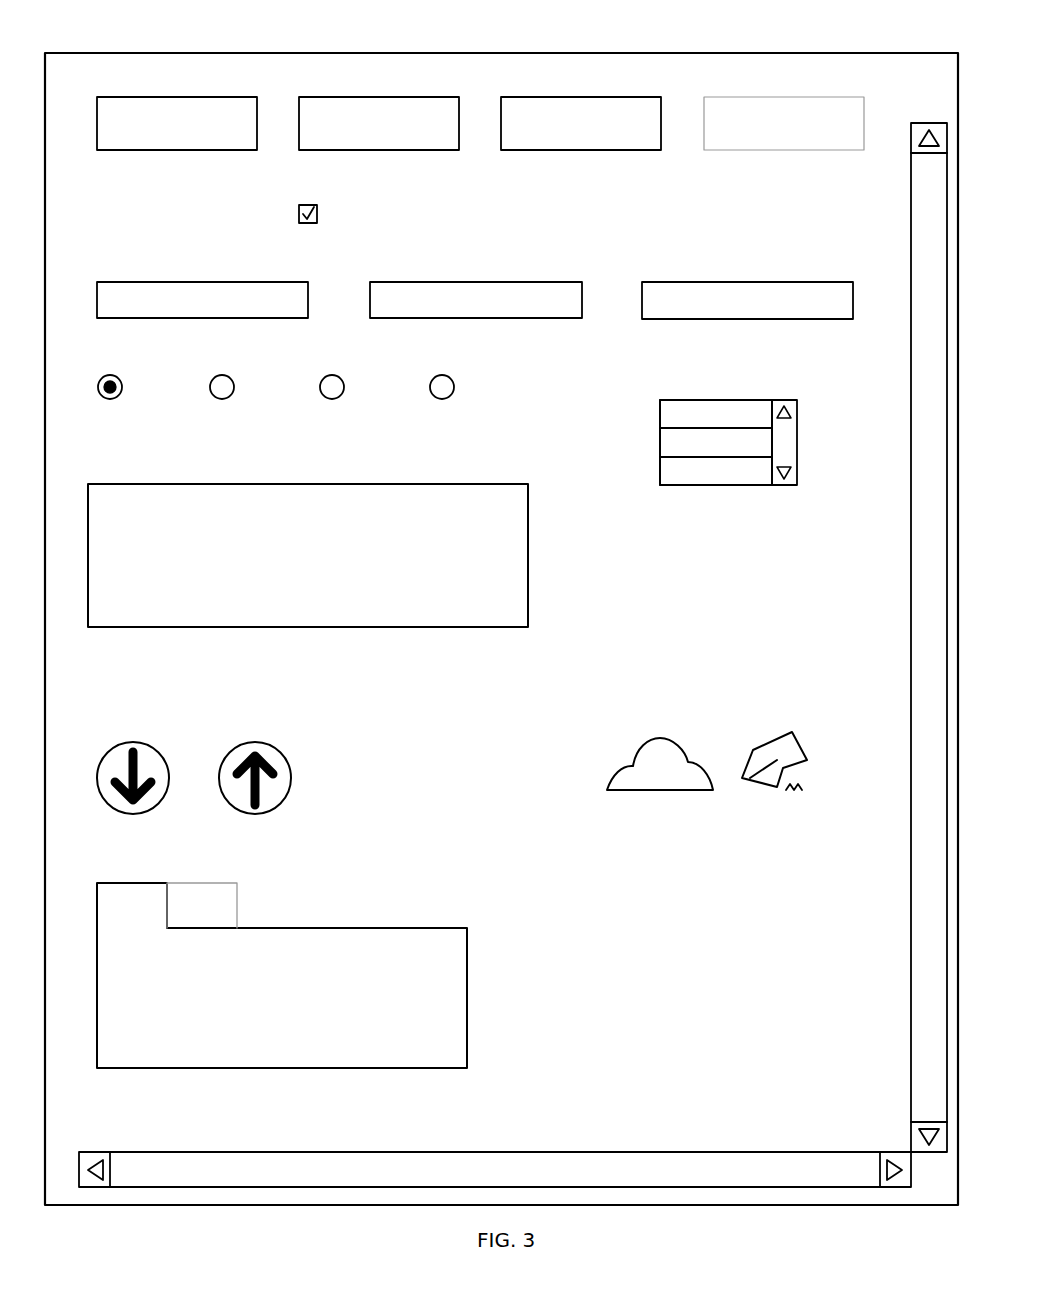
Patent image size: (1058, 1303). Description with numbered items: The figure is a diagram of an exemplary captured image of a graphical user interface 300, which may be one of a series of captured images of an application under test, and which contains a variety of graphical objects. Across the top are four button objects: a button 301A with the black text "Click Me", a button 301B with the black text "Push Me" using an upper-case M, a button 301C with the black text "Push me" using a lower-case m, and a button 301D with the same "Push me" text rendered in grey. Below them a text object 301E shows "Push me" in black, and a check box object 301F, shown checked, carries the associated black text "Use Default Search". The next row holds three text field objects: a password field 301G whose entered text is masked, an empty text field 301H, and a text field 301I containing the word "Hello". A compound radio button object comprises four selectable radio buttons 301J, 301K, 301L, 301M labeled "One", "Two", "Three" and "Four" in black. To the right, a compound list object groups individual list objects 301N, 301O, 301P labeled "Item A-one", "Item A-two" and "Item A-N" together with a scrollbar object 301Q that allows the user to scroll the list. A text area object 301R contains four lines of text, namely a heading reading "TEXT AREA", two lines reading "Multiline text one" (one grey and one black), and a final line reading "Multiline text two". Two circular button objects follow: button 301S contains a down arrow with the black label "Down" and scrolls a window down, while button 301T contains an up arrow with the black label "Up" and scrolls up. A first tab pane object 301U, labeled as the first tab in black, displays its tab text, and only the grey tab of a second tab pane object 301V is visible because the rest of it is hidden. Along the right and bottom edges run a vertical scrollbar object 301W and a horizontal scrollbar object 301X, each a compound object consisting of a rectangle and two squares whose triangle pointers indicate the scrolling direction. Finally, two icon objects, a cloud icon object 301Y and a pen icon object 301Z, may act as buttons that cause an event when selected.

The graphical user interface 300 is at (539, 52).
The button object 301A is at (178, 97).
The button object 301B is at (380, 97).
The button object 301C is at (582, 97).
The button object 301D is at (784, 97).
The text object 301E is at (152, 203).
The check box object 301F is at (365, 203).
The password field 301G is at (203, 282).
The text field 301H is at (476, 282).
The text field 301I is at (748, 282).
The selectable radio button object 301J is at (112, 372).
The selectable radio button object 301K is at (222, 372).
The selectable radio button object 301L is at (332, 372).
The selectable radio button object 301M is at (442, 372).
The list object 301N is at (660, 412).
The list object 301O is at (660, 440).
The list object 301P is at (660, 467).
The scrollbar object 301Q is at (782, 400).
The text area object 301R is at (318, 484).
The circular button object 301S is at (133, 710).
The circular button object 301T is at (256, 710).
The first tab pane object 301U is at (115, 883).
The second tab pane object 301V is at (212, 883).
The vertical scrollbar object 301W is at (945, 122).
The horizontal scrollbar object 301X is at (730, 1152).
The cloud icon object 301Y is at (668, 738).
The pen icon object 301Z is at (783, 740).